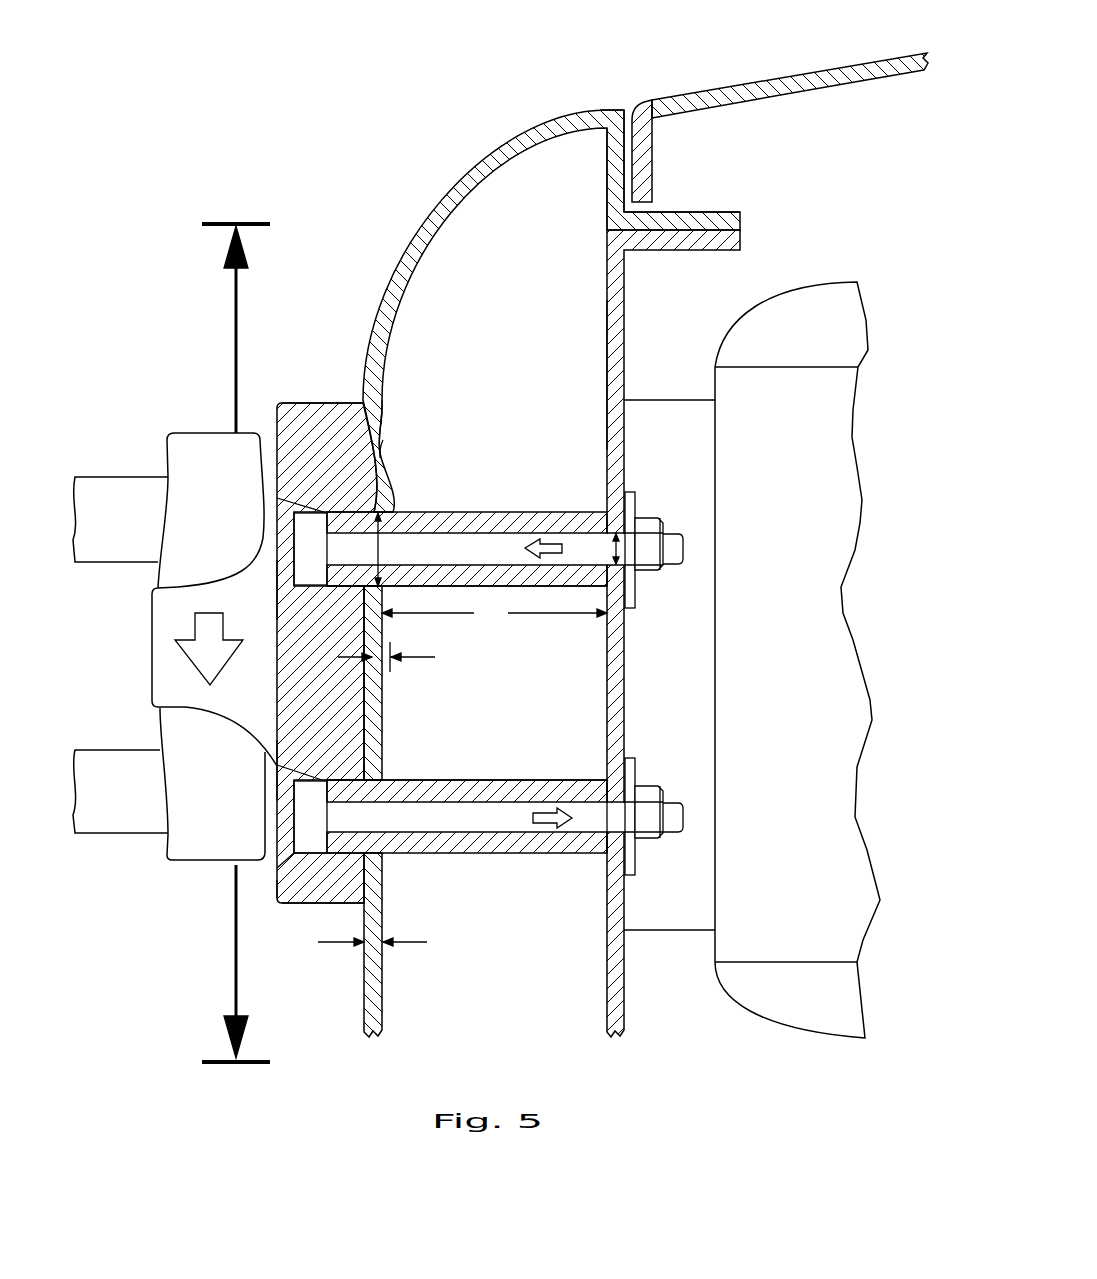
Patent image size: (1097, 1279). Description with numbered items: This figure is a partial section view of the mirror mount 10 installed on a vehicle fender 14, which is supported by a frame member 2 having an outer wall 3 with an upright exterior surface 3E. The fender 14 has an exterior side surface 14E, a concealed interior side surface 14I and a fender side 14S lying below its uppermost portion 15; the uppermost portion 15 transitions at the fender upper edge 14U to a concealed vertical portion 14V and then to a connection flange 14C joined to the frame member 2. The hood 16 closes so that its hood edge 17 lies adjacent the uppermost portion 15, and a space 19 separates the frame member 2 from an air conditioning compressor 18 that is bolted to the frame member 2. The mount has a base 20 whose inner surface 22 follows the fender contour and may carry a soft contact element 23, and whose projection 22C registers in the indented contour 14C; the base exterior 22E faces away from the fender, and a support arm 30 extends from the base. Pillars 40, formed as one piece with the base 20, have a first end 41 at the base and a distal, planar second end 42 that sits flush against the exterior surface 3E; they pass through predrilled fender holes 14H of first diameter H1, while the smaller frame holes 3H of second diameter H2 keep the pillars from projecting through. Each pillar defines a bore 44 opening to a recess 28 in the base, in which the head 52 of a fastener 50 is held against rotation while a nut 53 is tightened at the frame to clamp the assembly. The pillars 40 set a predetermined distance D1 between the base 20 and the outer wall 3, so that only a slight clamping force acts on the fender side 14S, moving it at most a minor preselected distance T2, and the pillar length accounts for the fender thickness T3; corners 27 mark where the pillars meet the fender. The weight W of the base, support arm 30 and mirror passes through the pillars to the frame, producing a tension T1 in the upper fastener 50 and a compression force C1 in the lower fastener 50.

The frame member 2 is at (603, 277).
The frame outer wall 3 is at (607, 365).
The frame exterior surface 3E is at (607, 430).
The frame holes 3H is at (622, 566).
The mirror mount 10 is at (153, 906).
The fender 14 is at (362, 333).
The fender upper edge 14U is at (614, 108).
The vertical portion 14V is at (607, 183).
The connection flange 14C is at (683, 213).
The fender holes 14H is at (393, 512).
The interior side surface 14I is at (384, 688).
The exterior side surface 14E is at (367, 978).
The fender side 14S is at (235, 390).
The uppermost portion 15 is at (597, 101).
The hood 16 is at (797, 72).
The hood edge 17 is at (633, 117).
The air conditioning compressor 18 is at (744, 312).
The gap 19 is at (887, 215).
The base 20 is at (324, 395).
The inner surface 22 is at (378, 457).
The projection 22C is at (375, 503).
The base exterior 22E is at (277, 880).
The contact element 23 is at (381, 420).
The corner 27 is at (362, 586).
The recess 28 is at (290, 587).
The support arm 30 is at (123, 767).
The pillars 40 is at (513, 512).
The first end 41 is at (367, 847).
The second end 42 is at (596, 853).
The bore 44 is at (518, 590).
The fastener 50 is at (670, 532).
The head 52 is at (308, 545).
The nut 53 is at (625, 567).
The weight W is at (209, 649).
The tension T1 is at (550, 532).
The preselected distance T2 is at (399, 657).
The fender thickness T3 is at (387, 944).
The first hole diameter H1 is at (382, 547).
The second hole diameter H2 is at (620, 553).
The predetermined distance D1 is at (494, 614).
The compression force C1 is at (553, 808).